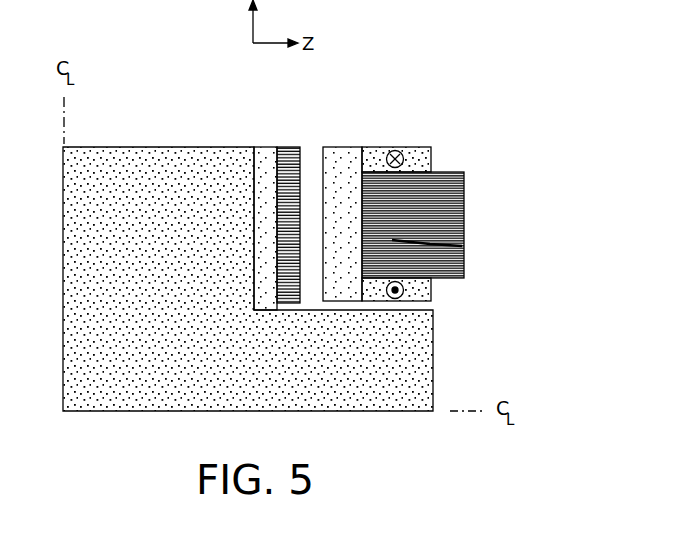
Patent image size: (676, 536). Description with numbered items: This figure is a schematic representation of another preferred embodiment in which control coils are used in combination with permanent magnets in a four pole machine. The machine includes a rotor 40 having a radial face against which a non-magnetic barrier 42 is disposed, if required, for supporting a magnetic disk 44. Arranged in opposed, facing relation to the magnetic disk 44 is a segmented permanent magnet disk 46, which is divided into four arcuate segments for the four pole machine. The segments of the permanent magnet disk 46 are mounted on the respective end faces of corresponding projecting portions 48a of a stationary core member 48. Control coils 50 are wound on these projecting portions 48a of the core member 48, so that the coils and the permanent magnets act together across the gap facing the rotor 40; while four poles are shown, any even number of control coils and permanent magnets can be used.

The rotor 40 is at (416, 360).
The non-magnetic barrier 42 is at (265, 182).
The magnetic disk 44 is at (289, 168).
The segmented permanent magnet disk 46 is at (347, 165).
The stationary core member 48 is at (465, 194).
The projecting portions 48a is at (465, 247).
The control coils 50 is at (421, 149).